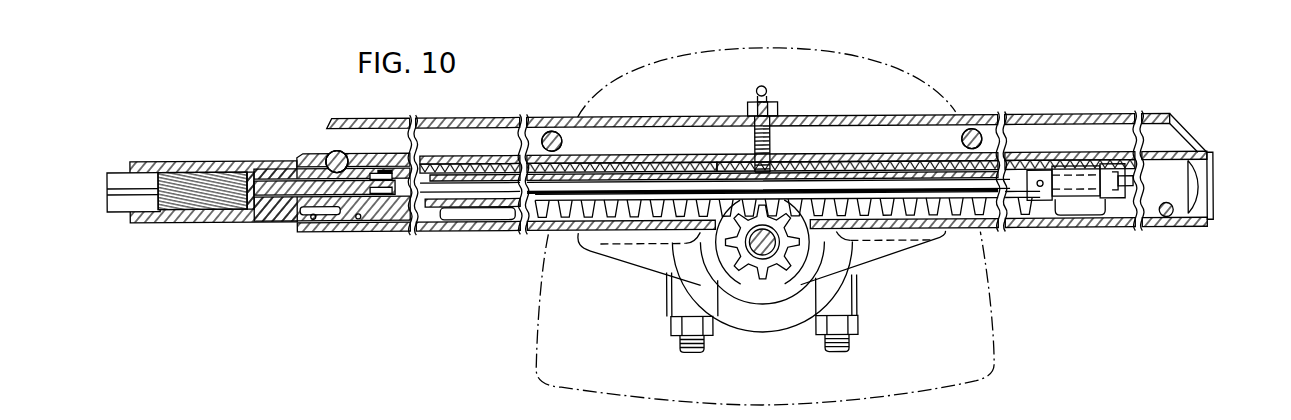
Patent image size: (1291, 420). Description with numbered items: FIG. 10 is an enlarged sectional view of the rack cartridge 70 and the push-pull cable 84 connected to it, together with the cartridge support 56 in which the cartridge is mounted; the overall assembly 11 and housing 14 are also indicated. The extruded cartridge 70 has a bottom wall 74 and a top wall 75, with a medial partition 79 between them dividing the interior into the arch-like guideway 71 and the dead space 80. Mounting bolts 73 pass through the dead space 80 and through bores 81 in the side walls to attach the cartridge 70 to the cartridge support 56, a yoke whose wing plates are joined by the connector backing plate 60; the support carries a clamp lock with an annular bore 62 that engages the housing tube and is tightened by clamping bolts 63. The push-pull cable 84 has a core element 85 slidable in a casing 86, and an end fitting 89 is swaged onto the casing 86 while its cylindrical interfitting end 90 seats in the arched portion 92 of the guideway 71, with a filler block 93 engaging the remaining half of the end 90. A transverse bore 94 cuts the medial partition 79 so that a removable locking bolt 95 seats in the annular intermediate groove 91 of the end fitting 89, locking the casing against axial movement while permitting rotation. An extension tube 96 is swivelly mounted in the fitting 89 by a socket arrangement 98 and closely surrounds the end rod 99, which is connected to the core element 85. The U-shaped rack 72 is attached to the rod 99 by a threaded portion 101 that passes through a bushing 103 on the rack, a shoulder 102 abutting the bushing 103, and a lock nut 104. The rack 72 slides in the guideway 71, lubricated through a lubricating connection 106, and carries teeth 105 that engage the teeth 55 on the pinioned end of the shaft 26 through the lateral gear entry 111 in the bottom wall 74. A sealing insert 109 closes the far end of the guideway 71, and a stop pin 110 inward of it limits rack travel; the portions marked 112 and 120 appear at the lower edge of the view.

The drive assembly 11 is at (1145, 67).
The housing 14 is at (1003, 343).
The shaft 26 is at (763, 252).
The teeth 55 is at (784, 255).
The cartridge support 56 is at (877, 266).
The connector backing plate 60 is at (700, 258).
The annular bore 62 is at (818, 276).
The clamping bolts 63 is at (678, 346).
The rack cartridge 70 is at (992, 115).
The guideway 71 is at (490, 156).
The rack 72 is at (704, 153).
The mounting bolts 73 is at (553, 130).
The bottom wall 74 is at (430, 230).
The top wall 75 is at (466, 117).
The medial partition 79 is at (797, 166).
The dead space 80 is at (630, 139).
The bores 81 is at (565, 143).
The push-pull cable 84 is at (116, 168).
The core element 85 is at (282, 183).
The casing 86 is at (124, 200).
The end fitting 89 is at (268, 226).
The interfitting end 90 is at (313, 221).
The annular intermediate groove 91 is at (345, 161).
The arched portion 92 is at (668, 165).
The filler block 93 is at (358, 219).
The bore 94 is at (338, 147).
The removable locking bolt 95 is at (331, 155).
The extension tube 96 is at (565, 232).
The socket arrangement 98 is at (386, 166).
The end rod 99 is at (852, 187).
The threaded portion 101 is at (1132, 185).
The shoulder 102 is at (1050, 203).
The bushing 103 is at (1073, 173).
The lock nut 104 is at (1108, 208).
The teeth 105 is at (971, 212).
The lubricating connection 106 is at (768, 92).
The sealing insert 109 is at (1215, 188).
The stop pin 110 is at (1166, 220).
The lateral gear entry 111 is at (712, 270).
The housing portion 112 is at (619, 415).
The housing portion 120 is at (951, 415).